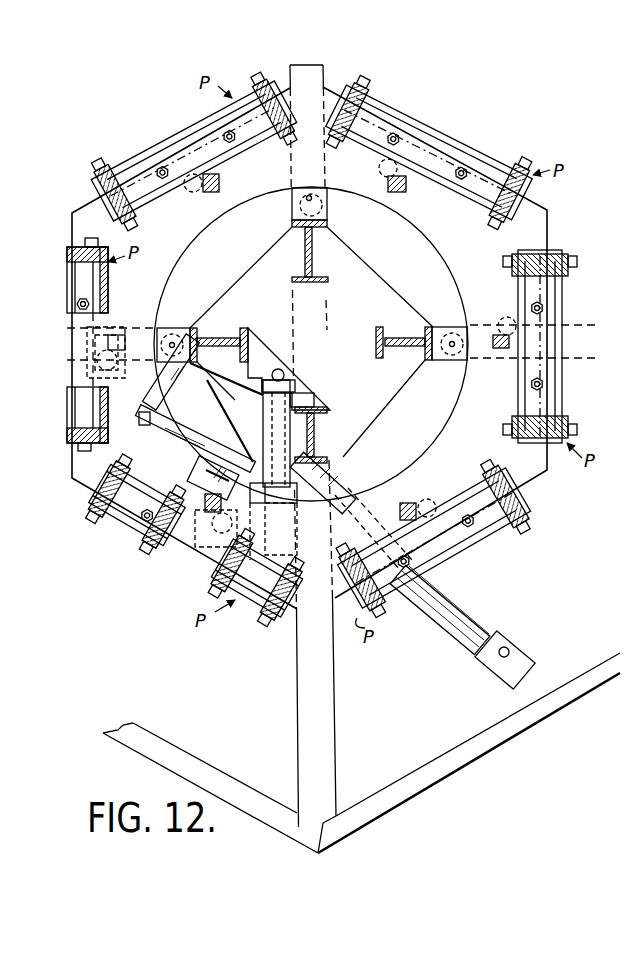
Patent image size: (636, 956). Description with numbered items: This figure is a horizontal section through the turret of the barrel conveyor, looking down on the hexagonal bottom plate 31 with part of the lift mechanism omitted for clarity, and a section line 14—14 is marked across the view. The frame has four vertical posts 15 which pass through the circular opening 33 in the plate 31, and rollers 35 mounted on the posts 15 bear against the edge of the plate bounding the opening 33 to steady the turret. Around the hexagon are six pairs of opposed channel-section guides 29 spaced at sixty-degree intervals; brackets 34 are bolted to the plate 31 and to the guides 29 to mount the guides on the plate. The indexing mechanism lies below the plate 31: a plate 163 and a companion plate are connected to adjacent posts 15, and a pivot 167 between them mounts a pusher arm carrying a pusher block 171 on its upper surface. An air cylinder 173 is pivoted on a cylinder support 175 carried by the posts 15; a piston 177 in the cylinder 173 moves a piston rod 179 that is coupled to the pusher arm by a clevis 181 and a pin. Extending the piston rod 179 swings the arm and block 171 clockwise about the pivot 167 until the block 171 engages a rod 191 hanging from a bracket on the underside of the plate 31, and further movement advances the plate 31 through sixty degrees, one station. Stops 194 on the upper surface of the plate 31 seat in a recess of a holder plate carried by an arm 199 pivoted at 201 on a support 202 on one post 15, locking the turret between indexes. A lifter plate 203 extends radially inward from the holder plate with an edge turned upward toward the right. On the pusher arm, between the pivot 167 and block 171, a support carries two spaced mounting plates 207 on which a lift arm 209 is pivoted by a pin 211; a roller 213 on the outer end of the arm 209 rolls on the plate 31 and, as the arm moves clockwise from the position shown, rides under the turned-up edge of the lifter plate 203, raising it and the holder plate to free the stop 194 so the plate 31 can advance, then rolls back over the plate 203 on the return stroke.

The section line 14- 14 is at (268, 306).
The posts 15 is at (315, 253).
The guides 29 is at (225, 104).
The hexagonal bottom plate 31 is at (548, 212).
The circular opening 33 is at (437, 248).
The brackets 34 is at (413, 145).
The rollers 35 is at (313, 188).
The plate 163 is at (260, 333).
The pivot 167 is at (282, 372).
The pusher block 171 is at (290, 548).
The air cylinder 173 is at (463, 597).
The cylinder support 175 is at (445, 577).
The piston 177 is at (478, 607).
The piston rod 179 is at (343, 487).
The clevis 181 is at (317, 457).
The rod 191 is at (193, 193).
The stops 194 is at (219, 180).
The arm 199 is at (188, 427).
The pivot 201 is at (150, 428).
The support 202 is at (173, 400).
The lifter plate 203 is at (207, 470).
The mounting plates 207 is at (310, 400).
The lift arm 209 is at (280, 447).
The pin 211 is at (293, 380).
The roller 213 is at (290, 520).